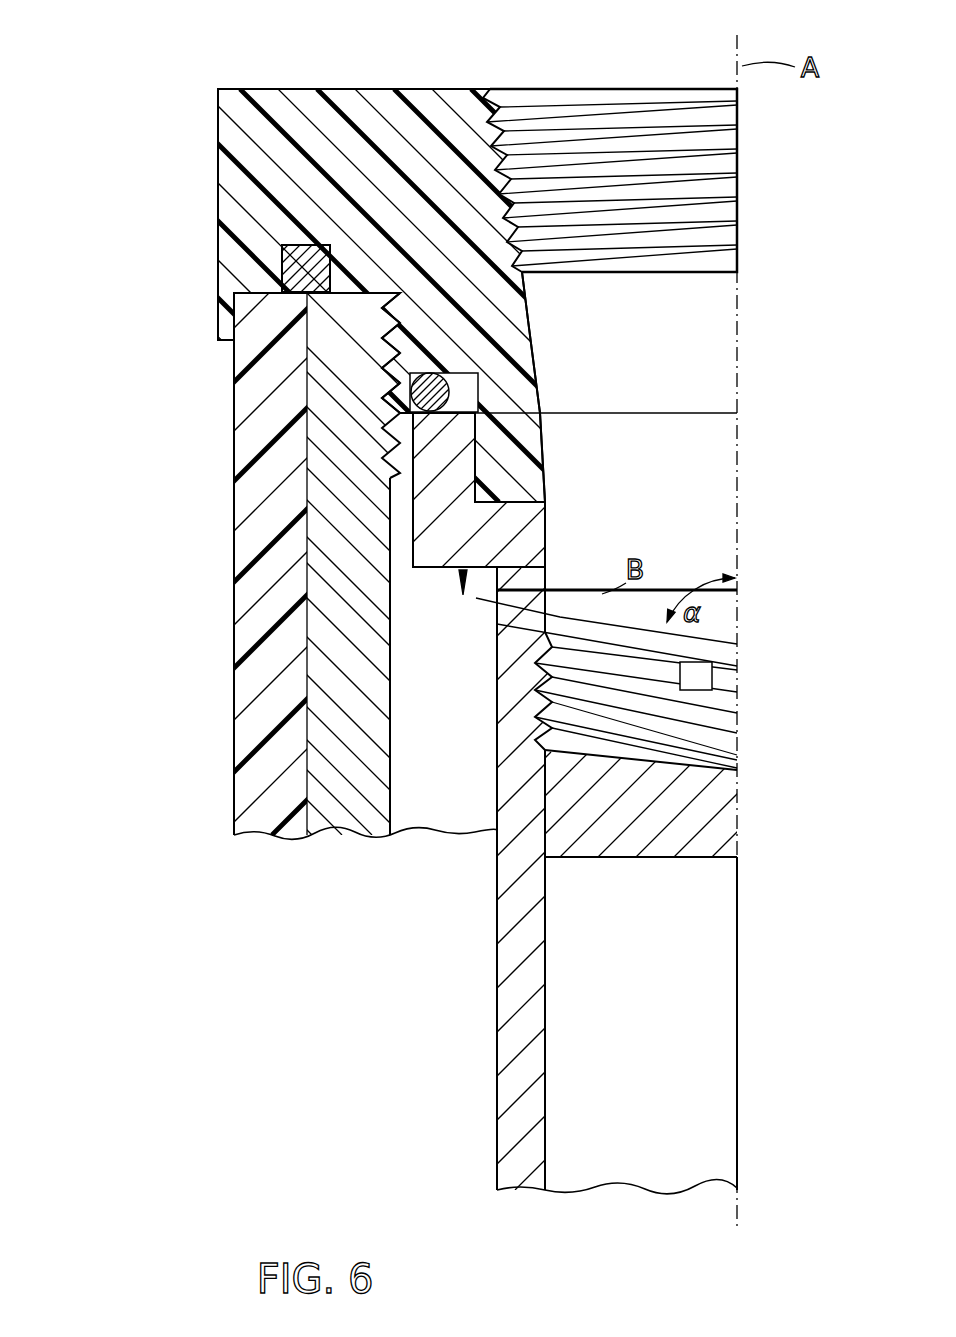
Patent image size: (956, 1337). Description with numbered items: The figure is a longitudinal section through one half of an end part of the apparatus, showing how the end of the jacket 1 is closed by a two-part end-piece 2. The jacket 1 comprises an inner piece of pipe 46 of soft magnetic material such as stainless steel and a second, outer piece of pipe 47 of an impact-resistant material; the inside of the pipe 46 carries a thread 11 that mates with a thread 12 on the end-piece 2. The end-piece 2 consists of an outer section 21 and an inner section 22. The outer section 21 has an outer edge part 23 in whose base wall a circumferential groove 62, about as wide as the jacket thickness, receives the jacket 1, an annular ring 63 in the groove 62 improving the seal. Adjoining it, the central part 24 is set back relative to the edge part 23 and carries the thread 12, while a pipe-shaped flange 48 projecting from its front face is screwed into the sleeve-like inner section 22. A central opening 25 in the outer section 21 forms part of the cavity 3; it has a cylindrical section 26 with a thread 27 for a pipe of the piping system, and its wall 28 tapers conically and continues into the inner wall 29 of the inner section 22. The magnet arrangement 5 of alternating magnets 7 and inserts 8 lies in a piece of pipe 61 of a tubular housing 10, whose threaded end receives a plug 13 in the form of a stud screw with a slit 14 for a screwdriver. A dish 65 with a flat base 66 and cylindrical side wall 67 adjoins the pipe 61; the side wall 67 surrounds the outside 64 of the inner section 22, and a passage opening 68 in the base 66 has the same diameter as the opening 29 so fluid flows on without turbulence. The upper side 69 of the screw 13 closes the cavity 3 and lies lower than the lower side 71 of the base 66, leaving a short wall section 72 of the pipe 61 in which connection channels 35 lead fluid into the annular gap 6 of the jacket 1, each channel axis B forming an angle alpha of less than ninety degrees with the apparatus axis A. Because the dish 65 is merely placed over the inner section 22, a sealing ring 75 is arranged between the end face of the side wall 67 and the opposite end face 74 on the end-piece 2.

The jacket 1 is at (203, 818).
The end-piece 2 is at (183, 200).
The cavity 3 is at (652, 331).
The magnet arrangement 5 is at (770, 935).
The annular gap 6 is at (425, 791).
The magnets 7 is at (617, 1008).
The inserts 8 is at (712, 800).
The tubular housing 10 is at (486, 1080).
The thread 11 is at (382, 372).
The thread 12 is at (382, 332).
The plug 13 is at (712, 715).
The slit 14 is at (700, 680).
The outer section 21 is at (210, 105).
The inner section 22 is at (395, 472).
The outer edge part 23 is at (210, 158).
The central part 24 is at (300, 316).
The central opening 25 is at (523, 89).
The section with cylindrical wall 26 is at (435, 118).
The thread 27 is at (503, 150).
The wall of the cavity 28 is at (526, 292).
The inner wall 29 is at (620, 412).
The connection channels 35 is at (494, 614).
The piece of pipe 46 is at (358, 808).
The outer piece of pipe 47 is at (263, 822).
The flange 48 is at (520, 450).
The piece of pipe 61 is at (505, 1148).
The circumferential groove 62 is at (220, 268).
The annular ring 63 is at (312, 258).
The outside 64 is at (450, 400).
The dish 65 is at (462, 590).
The base 66 is at (540, 516).
The side wall 67 is at (420, 512).
The passage opening 68 is at (678, 550).
The upper side 69 is at (707, 658).
The lower side 71 is at (425, 576).
The wall section 72 is at (552, 604).
The end face 74 is at (460, 368).
The sealing ring 75 is at (382, 455).